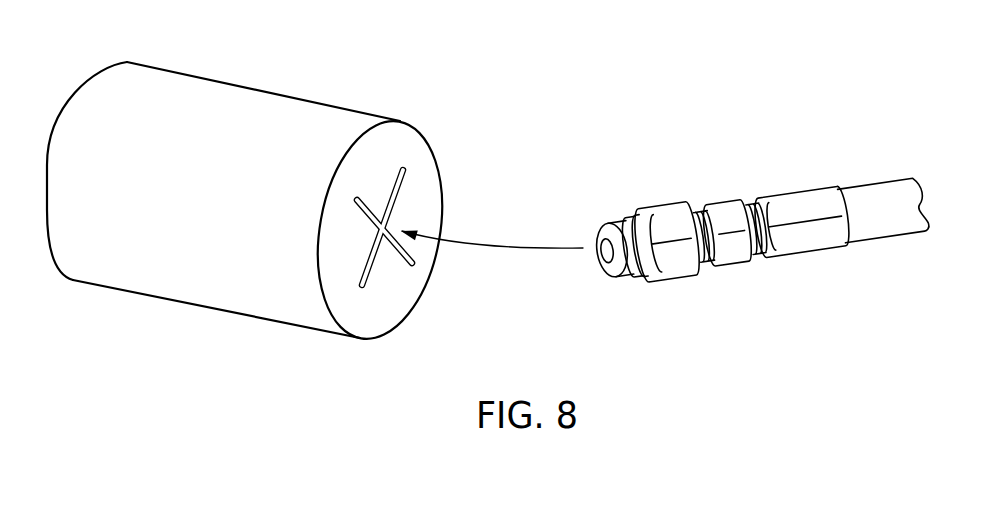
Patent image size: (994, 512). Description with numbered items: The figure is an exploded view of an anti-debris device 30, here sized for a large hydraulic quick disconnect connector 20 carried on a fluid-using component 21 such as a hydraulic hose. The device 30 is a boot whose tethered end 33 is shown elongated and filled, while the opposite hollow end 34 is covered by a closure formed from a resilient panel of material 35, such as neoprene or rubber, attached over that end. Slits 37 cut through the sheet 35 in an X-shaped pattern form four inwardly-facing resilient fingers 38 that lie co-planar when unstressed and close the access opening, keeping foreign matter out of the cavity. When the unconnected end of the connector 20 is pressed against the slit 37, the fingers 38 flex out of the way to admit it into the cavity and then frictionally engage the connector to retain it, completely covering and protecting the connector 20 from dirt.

The quick disconnect connector 20 is at (678, 193).
The fluid-using/conveying component 21 is at (613, 221).
The anti-debris device 30 is at (327, 82).
The tethered end 33 is at (74, 282).
The hollow end 34 is at (287, 330).
The resilient panel of material 35 is at (330, 331).
The slit 37 is at (402, 188).
The fingers 38 is at (390, 262).